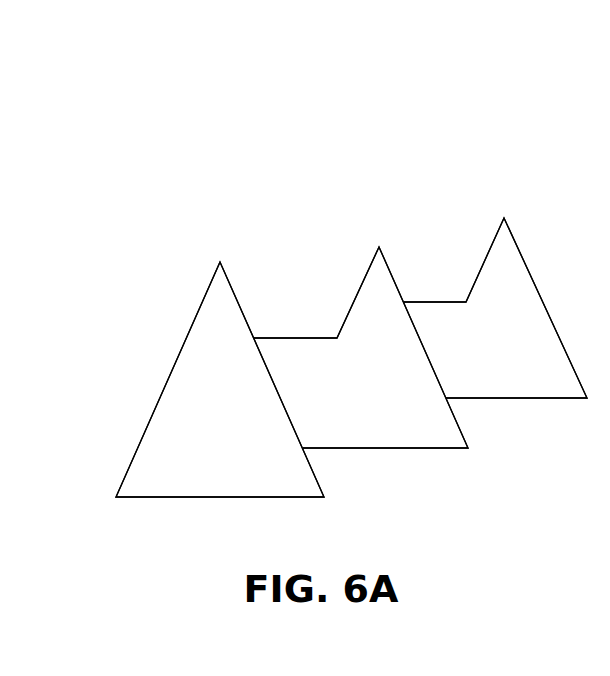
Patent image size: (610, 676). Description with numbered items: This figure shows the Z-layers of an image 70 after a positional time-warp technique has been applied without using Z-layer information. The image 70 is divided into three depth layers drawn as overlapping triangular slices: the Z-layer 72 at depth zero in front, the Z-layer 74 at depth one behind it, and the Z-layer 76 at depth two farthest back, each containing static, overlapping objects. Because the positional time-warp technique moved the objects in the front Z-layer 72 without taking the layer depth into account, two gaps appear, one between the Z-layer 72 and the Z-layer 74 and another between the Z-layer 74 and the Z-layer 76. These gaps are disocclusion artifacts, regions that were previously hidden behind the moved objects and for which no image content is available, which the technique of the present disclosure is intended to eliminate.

The image 70 is at (138, 93).
The Z-layer Z=0 72 is at (220, 286).
The Z-layer Z=1 74 is at (378, 289).
The Z-layer Z=2 76 is at (515, 262).